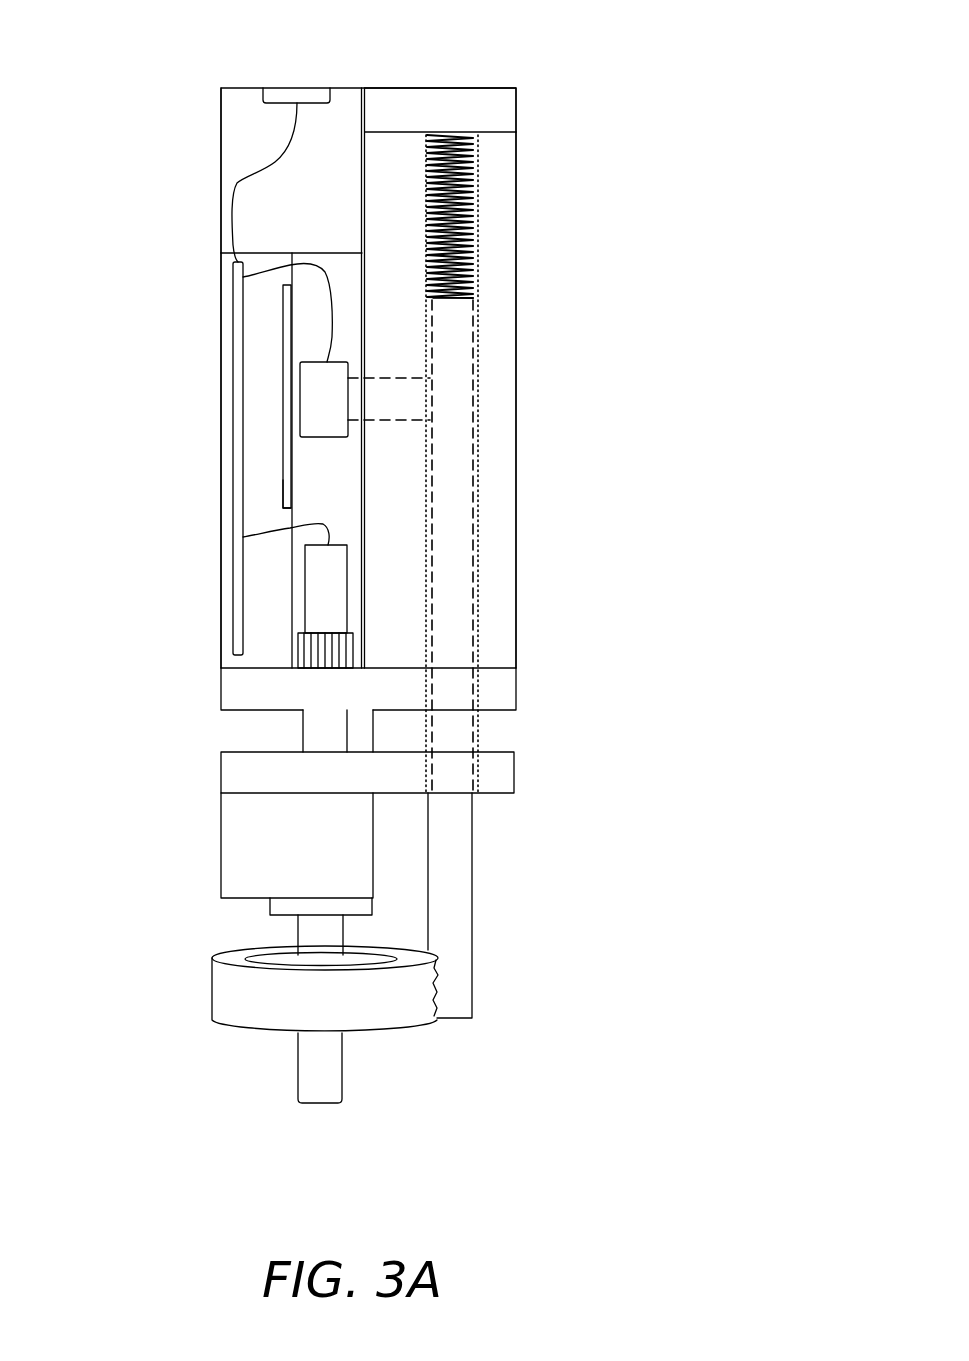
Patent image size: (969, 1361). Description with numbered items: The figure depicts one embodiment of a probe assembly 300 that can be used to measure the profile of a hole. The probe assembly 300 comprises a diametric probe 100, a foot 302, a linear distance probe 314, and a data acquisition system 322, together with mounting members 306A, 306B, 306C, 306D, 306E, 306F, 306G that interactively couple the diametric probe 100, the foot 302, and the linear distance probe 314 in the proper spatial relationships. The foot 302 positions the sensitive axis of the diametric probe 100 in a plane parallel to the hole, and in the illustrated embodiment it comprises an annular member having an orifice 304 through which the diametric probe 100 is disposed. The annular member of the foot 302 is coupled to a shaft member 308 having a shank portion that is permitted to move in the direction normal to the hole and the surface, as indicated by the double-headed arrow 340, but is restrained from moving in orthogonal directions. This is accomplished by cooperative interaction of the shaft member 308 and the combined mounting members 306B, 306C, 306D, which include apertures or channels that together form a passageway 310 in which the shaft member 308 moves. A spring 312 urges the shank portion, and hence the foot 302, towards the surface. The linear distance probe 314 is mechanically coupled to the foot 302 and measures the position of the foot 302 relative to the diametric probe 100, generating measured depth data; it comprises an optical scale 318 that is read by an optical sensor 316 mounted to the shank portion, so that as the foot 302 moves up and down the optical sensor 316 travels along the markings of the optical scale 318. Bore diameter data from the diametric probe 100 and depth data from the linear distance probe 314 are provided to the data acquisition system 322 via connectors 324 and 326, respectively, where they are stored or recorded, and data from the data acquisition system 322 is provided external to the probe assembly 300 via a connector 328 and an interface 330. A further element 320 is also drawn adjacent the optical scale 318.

The probe assembly 300 is at (678, 98).
The foot 302 is at (365, 1063).
The orifice 304 is at (258, 960).
The mounting member 306A is at (227, 860).
The mounting member 306B is at (227, 778).
The mounting member 306C is at (508, 702).
The mounting member 306D is at (507, 445).
The mounting member 306E is at (223, 337).
The mounting member 306F is at (233, 153).
The mounting member 306G is at (443, 100).
The shaft member 308 is at (473, 843).
The passageway 310 is at (475, 605).
The spring 312 is at (483, 207).
The linear distance probe 314 is at (346, 347).
The optical sensor 316 is at (340, 373).
The optical scale 318 is at (282, 497).
The rod 320 is at (282, 477).
The data acquisition system 322 is at (232, 425).
The connector 324 is at (272, 537).
The connector 326 is at (287, 268).
The connector 328 is at (240, 182).
The interface 330 is at (317, 88).
The vertical motion arrow 340 is at (513, 858).
The diametric probe 100 is at (310, 655).